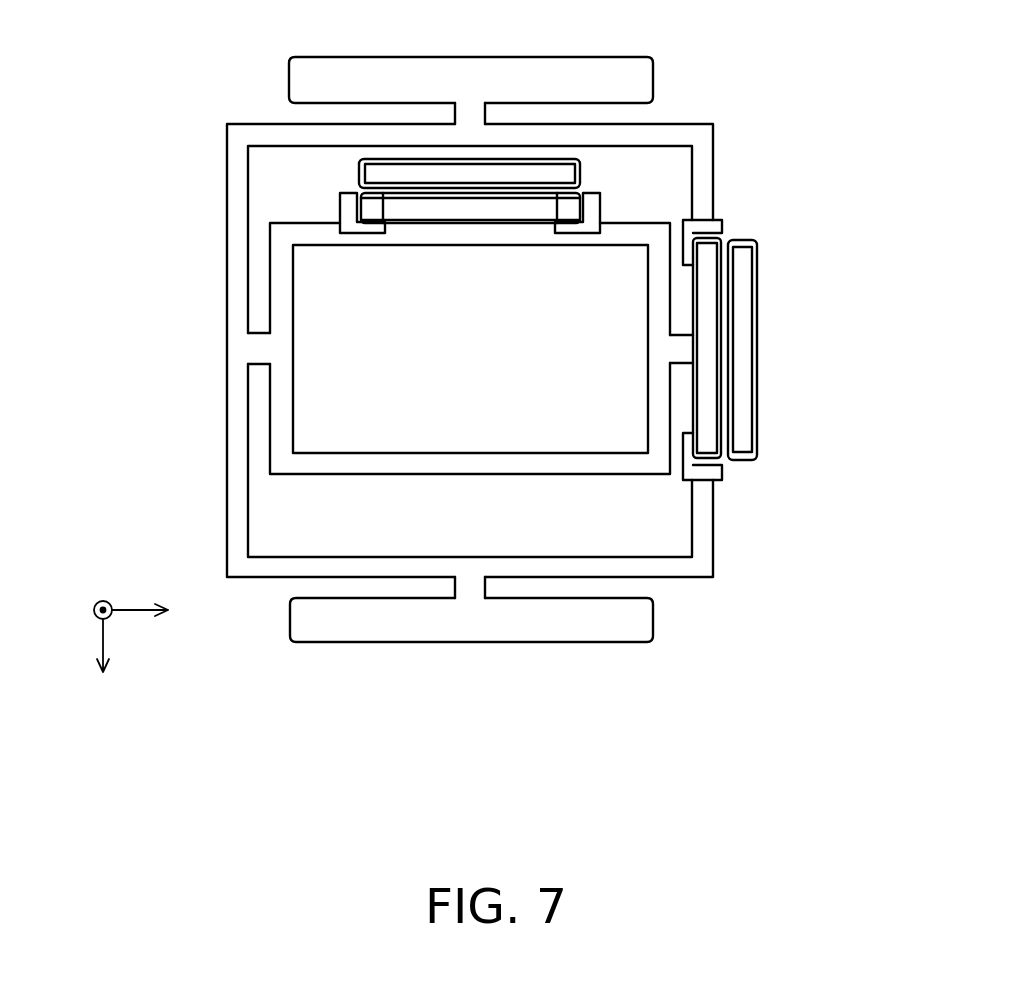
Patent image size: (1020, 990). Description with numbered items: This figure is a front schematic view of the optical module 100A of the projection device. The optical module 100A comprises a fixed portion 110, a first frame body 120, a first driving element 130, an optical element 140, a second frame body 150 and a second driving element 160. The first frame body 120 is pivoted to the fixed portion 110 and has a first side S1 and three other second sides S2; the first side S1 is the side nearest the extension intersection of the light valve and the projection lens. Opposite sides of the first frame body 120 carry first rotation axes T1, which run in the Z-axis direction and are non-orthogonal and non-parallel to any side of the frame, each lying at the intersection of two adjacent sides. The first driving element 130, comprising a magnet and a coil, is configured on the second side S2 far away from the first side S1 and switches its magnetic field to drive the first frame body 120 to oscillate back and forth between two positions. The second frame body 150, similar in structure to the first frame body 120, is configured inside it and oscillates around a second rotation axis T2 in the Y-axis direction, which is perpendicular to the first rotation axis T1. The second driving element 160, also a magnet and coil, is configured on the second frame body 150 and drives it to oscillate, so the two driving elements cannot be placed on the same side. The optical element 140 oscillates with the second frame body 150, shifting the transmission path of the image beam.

The optical module 100A is at (875, 645).
The fixed portion 110 is at (652, 84).
The first frame body 120 is at (708, 160).
The first driving element 130 is at (705, 448).
The optical element 140 is at (588, 432).
The second frame body 150 is at (278, 282).
The second driving element 160 is at (375, 211).
The first side S1 is at (204, 382).
The second sides S2 is at (437, 92).
The first rotation axis T1 is at (477, 115).
The second rotation axis T2 is at (260, 338).